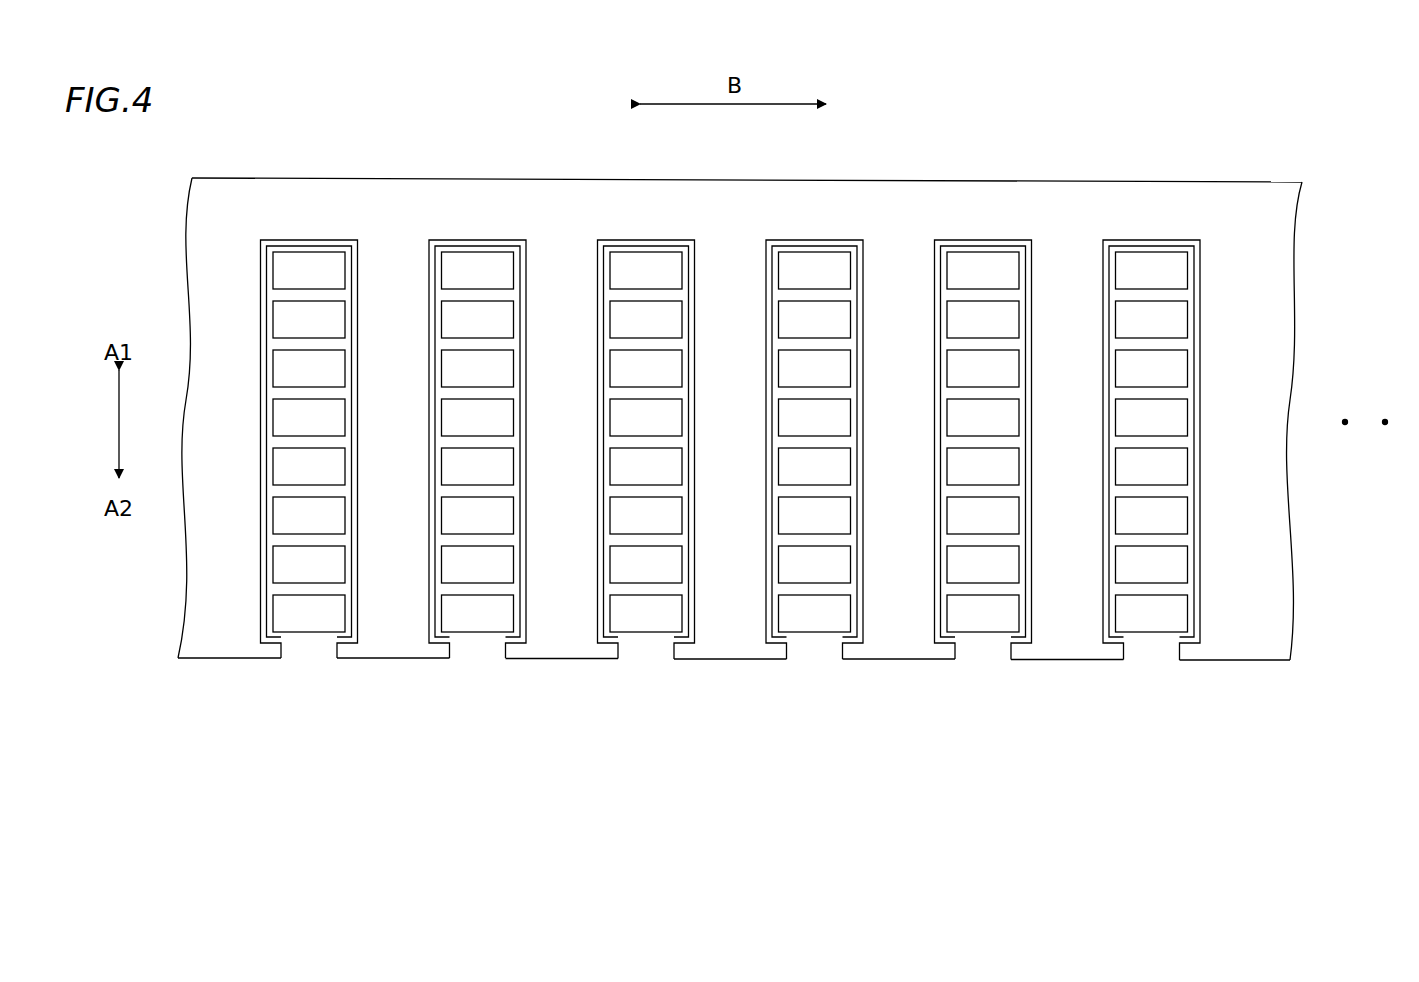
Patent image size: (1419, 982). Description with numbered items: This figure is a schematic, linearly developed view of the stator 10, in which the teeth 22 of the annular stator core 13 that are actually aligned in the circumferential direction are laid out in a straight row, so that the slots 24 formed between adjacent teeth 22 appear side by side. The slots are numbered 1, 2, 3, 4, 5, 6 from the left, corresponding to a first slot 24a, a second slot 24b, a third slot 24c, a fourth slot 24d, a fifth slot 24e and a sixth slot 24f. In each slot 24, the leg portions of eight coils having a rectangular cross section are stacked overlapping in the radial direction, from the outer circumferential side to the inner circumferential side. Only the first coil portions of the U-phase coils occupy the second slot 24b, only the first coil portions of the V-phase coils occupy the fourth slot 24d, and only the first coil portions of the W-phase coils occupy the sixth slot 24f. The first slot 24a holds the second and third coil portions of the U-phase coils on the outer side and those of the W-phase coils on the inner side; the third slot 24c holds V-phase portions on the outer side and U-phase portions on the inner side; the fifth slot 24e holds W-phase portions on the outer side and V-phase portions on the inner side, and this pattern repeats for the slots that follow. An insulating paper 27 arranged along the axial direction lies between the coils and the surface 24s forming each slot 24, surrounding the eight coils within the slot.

The stator 10 is at (1173, 124).
The stator core 13 is at (1222, 179).
The teeth 22 is at (398, 620).
The slot 24 is at (480, 638).
The first slot 24a is at (264, 294).
The second slot 24b is at (433, 294).
The third slot 24c is at (601, 294).
The fourth slot 24d is at (770, 294).
The fifth slot 24e is at (938, 294).
The sixth slot 24f is at (1106, 294).
The surface forming the slot 24s is at (262, 465).
The insulating paper 27 is at (261, 610).
The tooth number 1 is at (303, 475).
The tooth number 2 is at (445, 476).
The tooth number 3 is at (615, 438).
The tooth number 4 is at (783, 438).
The tooth number 5 is at (951, 439).
The tooth number 6 is at (1120, 439).